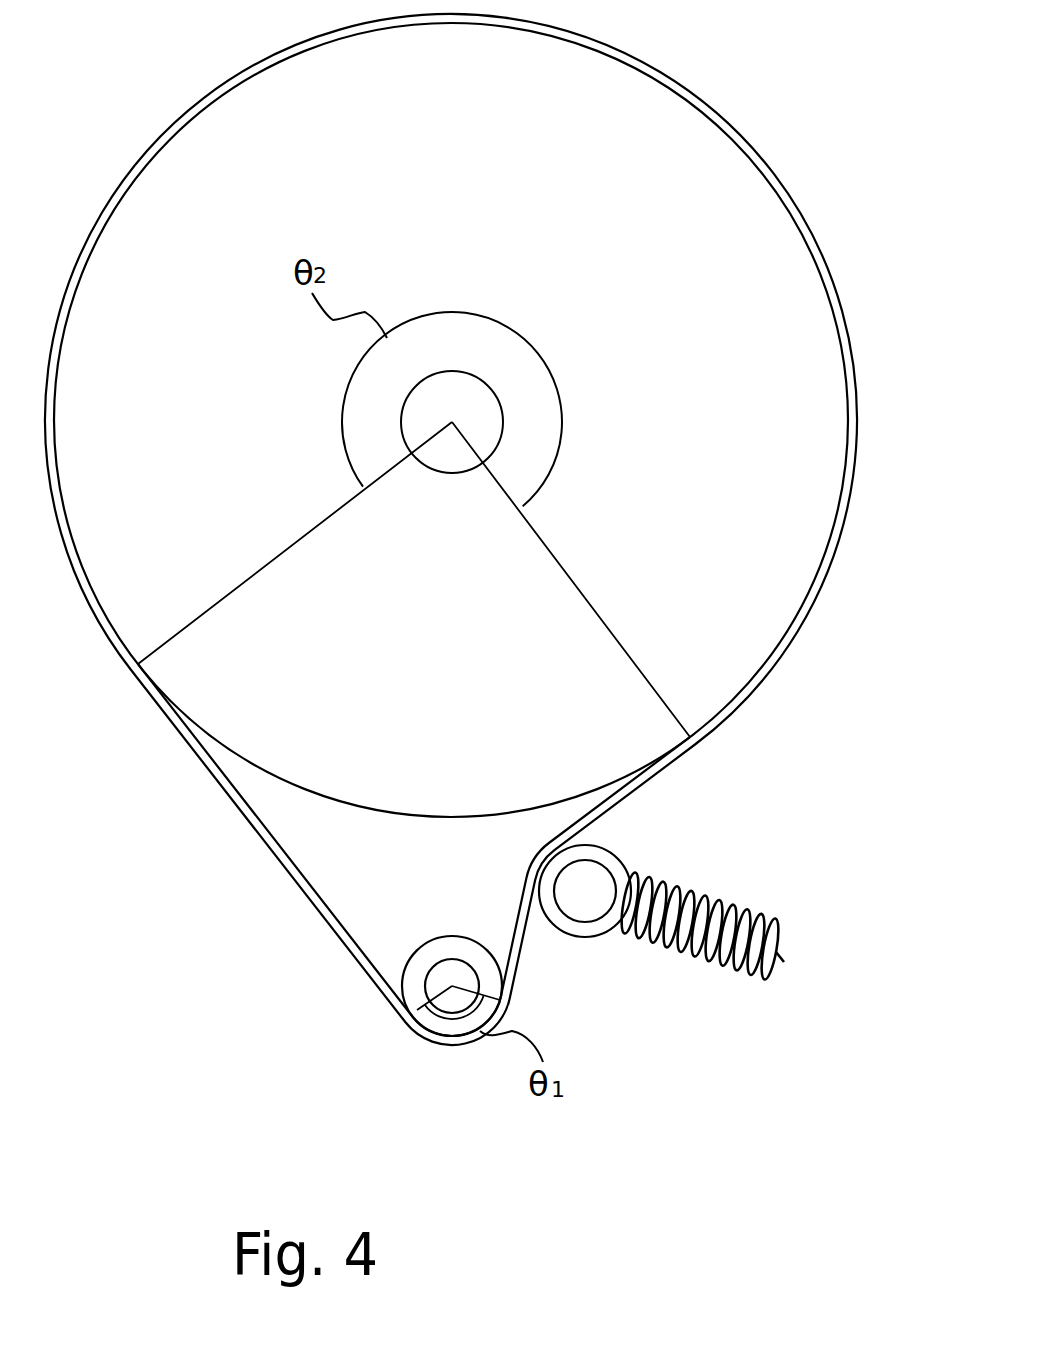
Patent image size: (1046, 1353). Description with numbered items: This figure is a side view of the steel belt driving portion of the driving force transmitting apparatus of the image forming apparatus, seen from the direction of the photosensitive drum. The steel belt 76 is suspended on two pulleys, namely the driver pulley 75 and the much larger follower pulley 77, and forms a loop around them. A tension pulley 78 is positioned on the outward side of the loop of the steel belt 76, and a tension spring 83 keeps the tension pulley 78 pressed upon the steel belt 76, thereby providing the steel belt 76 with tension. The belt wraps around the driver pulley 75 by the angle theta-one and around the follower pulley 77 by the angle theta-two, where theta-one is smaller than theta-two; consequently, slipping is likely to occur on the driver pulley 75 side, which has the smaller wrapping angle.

The follower pulley 77 is at (710, 157).
The steel belt 76 is at (273, 857).
The driver pulley 75 is at (417, 983).
The tension pulley 78 is at (618, 850).
The tension spring 83 is at (720, 897).